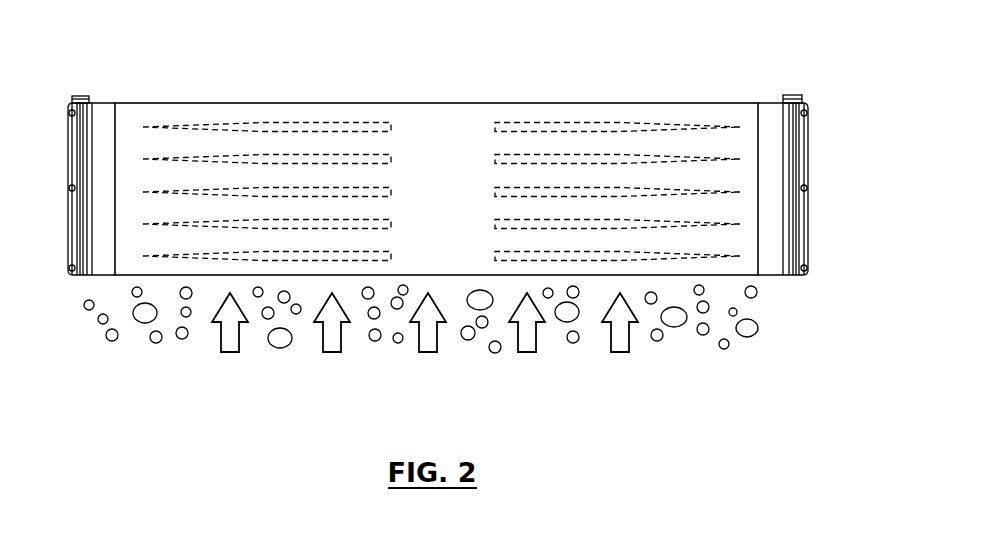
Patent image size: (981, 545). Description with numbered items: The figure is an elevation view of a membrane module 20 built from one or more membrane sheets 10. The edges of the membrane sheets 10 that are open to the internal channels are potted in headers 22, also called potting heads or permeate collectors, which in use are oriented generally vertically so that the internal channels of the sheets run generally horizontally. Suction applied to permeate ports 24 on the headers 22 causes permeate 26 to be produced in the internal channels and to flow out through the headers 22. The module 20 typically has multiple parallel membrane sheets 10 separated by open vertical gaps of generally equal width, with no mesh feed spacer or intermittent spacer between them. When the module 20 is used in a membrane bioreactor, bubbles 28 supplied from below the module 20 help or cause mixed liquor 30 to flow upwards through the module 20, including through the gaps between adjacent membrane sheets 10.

The membrane sheet 10 is at (707, 112).
The membrane module 20 is at (166, 373).
The header 22 is at (773, 110).
The permeate port 24 is at (85, 95).
The permeate 26 is at (534, 122).
The bubbles 28 is at (374, 339).
The mixed liquor 30 is at (530, 350).